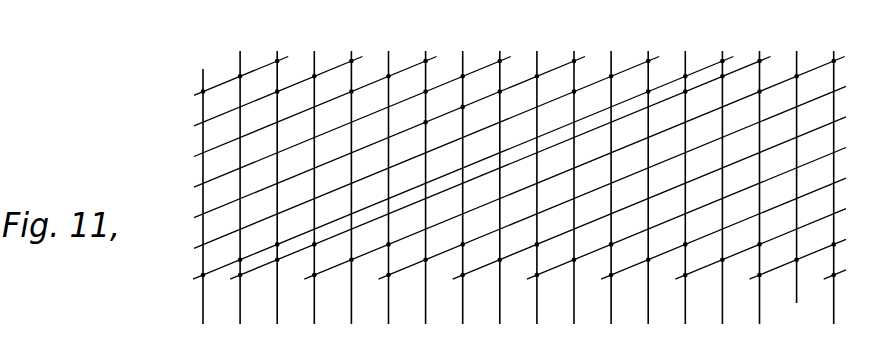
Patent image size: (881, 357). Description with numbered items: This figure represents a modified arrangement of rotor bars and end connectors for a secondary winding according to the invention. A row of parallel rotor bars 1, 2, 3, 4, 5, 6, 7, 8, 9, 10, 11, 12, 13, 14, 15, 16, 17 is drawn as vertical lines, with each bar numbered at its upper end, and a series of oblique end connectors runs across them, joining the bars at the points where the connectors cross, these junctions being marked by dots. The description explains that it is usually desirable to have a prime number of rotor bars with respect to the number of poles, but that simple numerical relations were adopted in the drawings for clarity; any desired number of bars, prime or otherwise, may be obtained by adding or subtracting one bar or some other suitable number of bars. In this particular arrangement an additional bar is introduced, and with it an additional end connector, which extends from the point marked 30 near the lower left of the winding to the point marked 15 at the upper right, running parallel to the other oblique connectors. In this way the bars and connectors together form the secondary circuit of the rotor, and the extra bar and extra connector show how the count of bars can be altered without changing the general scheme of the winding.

The rotor bar 1 is at (203, 177).
The rotor bar 2 is at (277, 177).
The rotor bar 3 is at (314, 177).
The rotor bar 4 is at (351, 177).
The rotor bar 5 is at (388, 177).
The rotor bar 6 is at (426, 177).
The rotor bar 7 is at (463, 177).
The rotor bar 8 is at (500, 177).
The rotor bar 9 is at (537, 177).
The rotor bar 10 is at (574, 177).
The rotor bar 11 is at (611, 177).
The rotor bar 12 is at (648, 177).
The rotor bar 13 is at (685, 177).
The rotor bar 14 is at (722, 177).
The point 15 is at (759, 177).
The rotor bar 16 is at (797, 167).
The rotor bar 17 is at (834, 177).
The point 30 is at (500, 176).